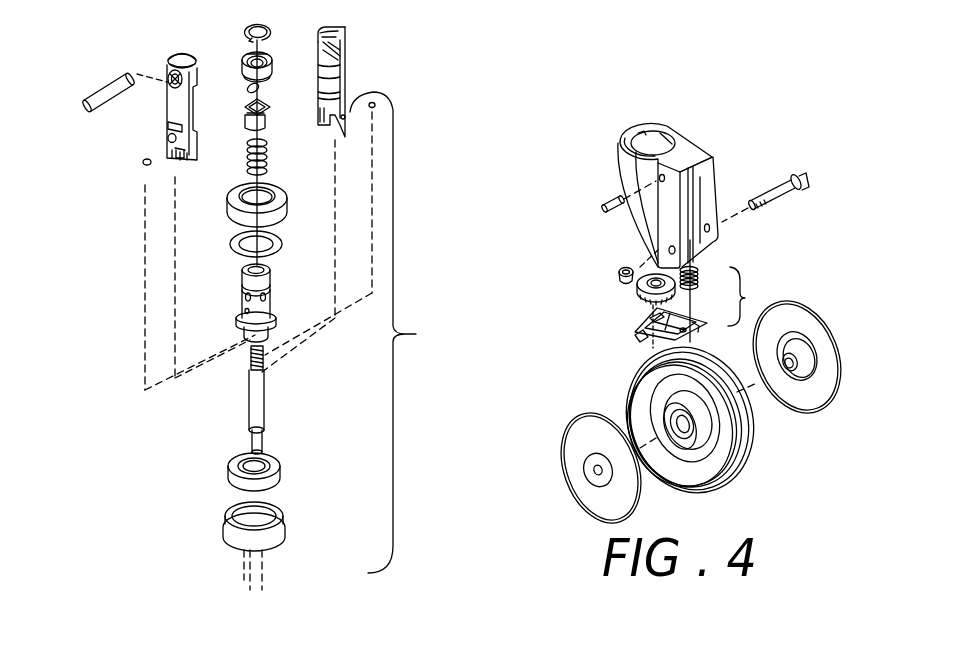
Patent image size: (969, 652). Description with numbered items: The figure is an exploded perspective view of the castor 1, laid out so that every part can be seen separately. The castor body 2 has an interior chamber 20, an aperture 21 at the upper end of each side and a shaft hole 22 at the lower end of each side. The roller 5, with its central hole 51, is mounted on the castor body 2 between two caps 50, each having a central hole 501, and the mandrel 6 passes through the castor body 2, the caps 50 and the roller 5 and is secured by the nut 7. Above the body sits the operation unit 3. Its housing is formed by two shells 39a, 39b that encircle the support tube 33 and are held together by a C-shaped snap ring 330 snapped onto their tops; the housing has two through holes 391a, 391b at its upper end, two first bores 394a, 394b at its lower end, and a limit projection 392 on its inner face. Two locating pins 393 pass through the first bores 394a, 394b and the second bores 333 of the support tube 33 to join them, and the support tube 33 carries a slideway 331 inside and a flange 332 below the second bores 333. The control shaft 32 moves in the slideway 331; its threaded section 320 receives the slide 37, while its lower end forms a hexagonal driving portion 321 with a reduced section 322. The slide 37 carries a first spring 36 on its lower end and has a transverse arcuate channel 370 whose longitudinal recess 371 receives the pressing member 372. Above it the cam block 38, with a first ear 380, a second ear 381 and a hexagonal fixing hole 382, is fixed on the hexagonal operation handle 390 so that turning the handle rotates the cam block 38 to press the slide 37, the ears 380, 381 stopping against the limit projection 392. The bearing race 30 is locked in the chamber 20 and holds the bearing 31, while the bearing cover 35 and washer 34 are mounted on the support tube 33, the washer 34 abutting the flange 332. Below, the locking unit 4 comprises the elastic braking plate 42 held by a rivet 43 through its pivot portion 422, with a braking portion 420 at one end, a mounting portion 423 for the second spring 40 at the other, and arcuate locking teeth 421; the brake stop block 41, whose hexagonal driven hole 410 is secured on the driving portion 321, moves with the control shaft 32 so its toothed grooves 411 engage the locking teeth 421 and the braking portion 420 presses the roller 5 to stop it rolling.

The castor 1 is at (424, 411).
The castor body 2 is at (692, 180).
The operation unit 3 is at (255, 297).
The locking unit 4 is at (743, 296).
The roller 5 is at (664, 431).
The mandrel 6 is at (800, 178).
The nut 7 is at (619, 266).
The chamber 20 is at (677, 128).
The aperture 21 is at (643, 222).
The shaft hole 22 is at (720, 234).
The bearing race 30 is at (283, 528).
The bearing 31 is at (278, 481).
The control shaft 32 is at (274, 400).
The support tube 33 is at (261, 301).
The washer 34 is at (282, 246).
The bearing cover 35 is at (287, 205).
The first spring 36 is at (267, 142).
The slide 37 is at (258, 103).
The cam block 38 is at (253, 56).
The shell 39a is at (170, 105).
The shell 39b is at (373, 79).
The second spring 40 is at (700, 266).
The brake stop block 41 is at (635, 300).
The elastic braking plate 42 is at (662, 337).
The rivet 43 is at (605, 203).
The cap 50 is at (813, 357).
The central hole 51 is at (697, 428).
The threaded section 320 is at (250, 368).
The hexagonal driving portion 321 is at (259, 412).
The reduced section 322 is at (262, 444).
The C-shaped snap ring 330 is at (272, 30).
The slideway 331 is at (266, 269).
The flange 332 is at (276, 320).
The second bores 333 is at (245, 308).
The transverse arcuate channel 370 is at (247, 89).
The longitudinal recess 371 is at (270, 104).
The pressing member 372 is at (261, 86).
The first ear 380 is at (276, 52).
The second ear 381 is at (270, 69).
The hexagonal fixing hole 382 is at (250, 68).
The operation handle 390 is at (106, 88).
The through hole 391a is at (166, 58).
The through hole 391b is at (343, 52).
The limit projection 392 is at (348, 30).
The locating pin 393 is at (143, 163).
The first bore 394a is at (178, 160).
The first bore 394b is at (385, 100).
The hexagonal driven hole 410 is at (630, 255).
The toothed grooves 411 is at (647, 302).
The braking portion 420 is at (637, 338).
The locking teeth 421 is at (660, 310).
The pivot portion 422 is at (697, 333).
The mounting portion 423 is at (687, 338).
The central hole 501 is at (800, 360).